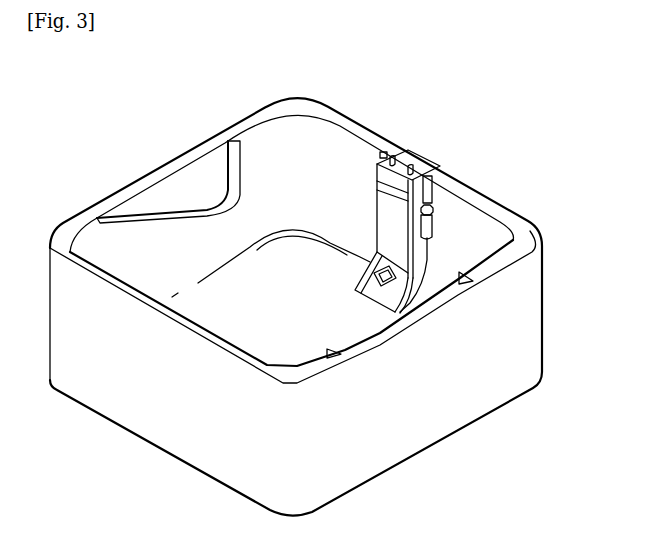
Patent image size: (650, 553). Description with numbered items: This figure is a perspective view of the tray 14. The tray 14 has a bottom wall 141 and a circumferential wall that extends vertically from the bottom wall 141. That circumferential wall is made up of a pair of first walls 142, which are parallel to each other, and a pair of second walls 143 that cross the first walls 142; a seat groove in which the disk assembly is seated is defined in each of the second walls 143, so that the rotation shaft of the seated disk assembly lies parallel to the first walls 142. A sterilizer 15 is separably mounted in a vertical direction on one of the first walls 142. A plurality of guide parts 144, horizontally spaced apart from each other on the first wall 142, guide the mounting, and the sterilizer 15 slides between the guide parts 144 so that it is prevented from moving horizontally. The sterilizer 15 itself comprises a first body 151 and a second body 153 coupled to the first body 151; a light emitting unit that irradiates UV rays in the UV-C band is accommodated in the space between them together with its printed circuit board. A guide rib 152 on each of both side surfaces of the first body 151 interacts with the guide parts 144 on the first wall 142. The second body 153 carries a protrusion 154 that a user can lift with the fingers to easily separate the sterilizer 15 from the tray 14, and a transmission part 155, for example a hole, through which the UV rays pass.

The tray 14 is at (182, 140).
The bottom wall 141 is at (232, 293).
The first walls 142 is at (338, 160).
The second walls 143 is at (258, 152).
The guide parts 144 is at (434, 226).
The sterilizer 15 is at (378, 158).
The first body 151 is at (426, 270).
The guide rib 152 is at (434, 203).
The second body 153 is at (424, 252).
The protrusion 154 is at (395, 191).
The transmission part 155 is at (412, 287).